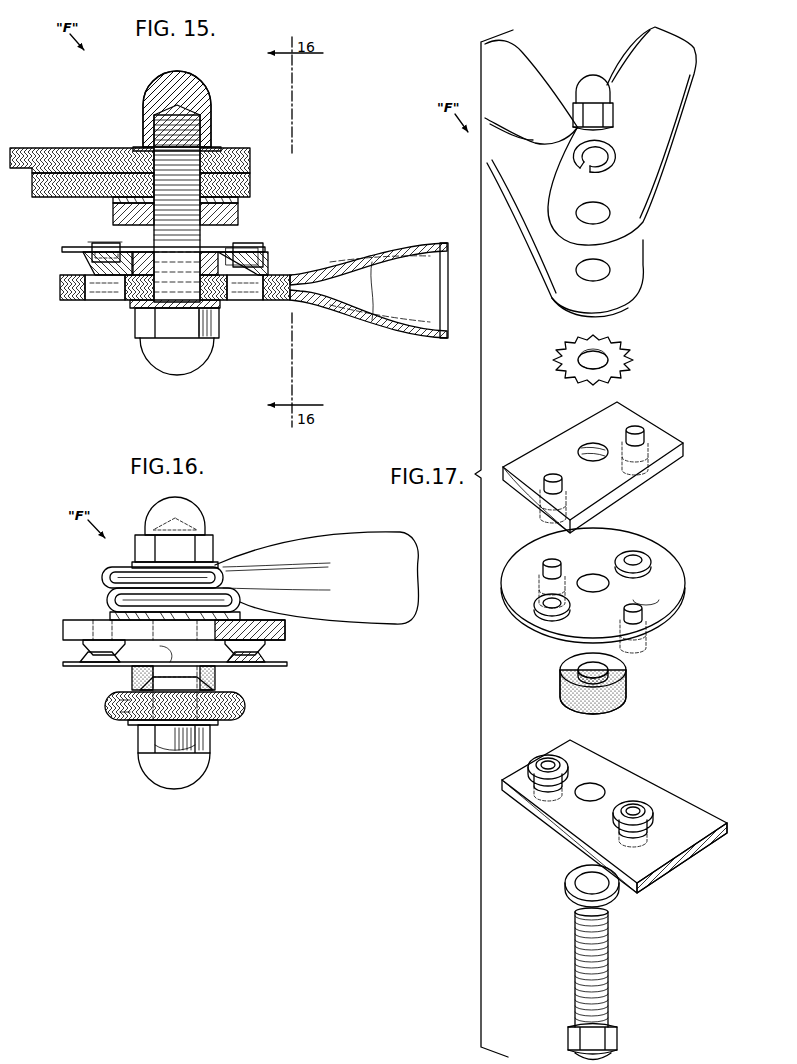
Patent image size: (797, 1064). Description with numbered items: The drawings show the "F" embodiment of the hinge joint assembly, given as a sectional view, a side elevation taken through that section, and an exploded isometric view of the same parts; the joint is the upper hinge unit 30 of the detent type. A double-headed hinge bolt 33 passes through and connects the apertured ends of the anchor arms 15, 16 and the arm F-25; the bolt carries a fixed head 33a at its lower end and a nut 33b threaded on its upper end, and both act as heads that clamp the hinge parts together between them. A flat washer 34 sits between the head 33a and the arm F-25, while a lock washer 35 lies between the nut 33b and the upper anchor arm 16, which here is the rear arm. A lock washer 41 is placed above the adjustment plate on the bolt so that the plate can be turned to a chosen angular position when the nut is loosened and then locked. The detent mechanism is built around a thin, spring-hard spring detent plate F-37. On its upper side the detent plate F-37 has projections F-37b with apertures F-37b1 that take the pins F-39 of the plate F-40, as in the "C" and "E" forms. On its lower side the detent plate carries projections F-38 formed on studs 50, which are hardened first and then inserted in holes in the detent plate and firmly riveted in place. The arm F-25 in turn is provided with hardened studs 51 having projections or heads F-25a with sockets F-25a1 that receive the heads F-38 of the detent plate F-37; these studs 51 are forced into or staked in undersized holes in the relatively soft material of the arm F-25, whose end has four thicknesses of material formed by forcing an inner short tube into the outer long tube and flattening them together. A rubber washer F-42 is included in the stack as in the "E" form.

In FIG. 15, the anchor arm 15 is at (36, 197).
In FIG. 16, the anchor arm 15 is at (107, 598).
In FIG. 17, the anchor arm 15 is at (640, 279).
In FIG. 15, the upper anchor arm 16 is at (40, 145).
In FIG. 16, the upper anchor arm 16 is at (222, 562).
In FIG. 17, the upper anchor arm 16 is at (640, 188).
In FIG. 15, the upper hinge unit 30 is at (144, 98).
In FIG. 15, the hinge bolt 33 is at (208, 138).
In FIG. 17, the hinge bolt 33 is at (608, 962).
In FIG. 15, the head 33a is at (202, 360).
In FIG. 16, the head 33a is at (190, 787).
In FIG. 17, the head 33a is at (618, 1037).
In FIG. 15, the nut 33b is at (200, 86).
In FIG. 16, the nut 33b is at (205, 515).
In FIG. 17, the nut 33b is at (590, 78).
In FIG. 15, the flat washer 34 is at (132, 308).
In FIG. 16, the flat washer 34 is at (218, 724).
In FIG. 17, the flat washer 34 is at (614, 893).
In FIG. 17, the lock washer 35 is at (615, 158).
In FIG. 15, the lock washer 41 is at (240, 203).
In FIG. 16, the lock washer 41 is at (110, 615).
In FIG. 17, the lock washer 41 is at (633, 353).
In FIG. 15, the stud 50 is at (84, 247).
In FIG. 16, the stud 50 is at (168, 652).
In FIG. 17, the stud 50 is at (650, 603).
In FIG. 15, the stud 51 is at (88, 300).
In FIG. 16, the stud 51 is at (145, 706).
In FIG. 17, the stud 51 is at (530, 769).
In FIG. 15, the arm F-25 is at (300, 272).
In FIG. 16, the arm F-25 is at (242, 712).
In FIG. 17, the arm F-25 is at (712, 818).
In FIG. 15, the projection F-25a is at (80, 275).
In FIG. 16, the projection F-25a is at (130, 690).
In FIG. 17, the projection F-25a is at (575, 765).
In FIG. 15, the socket F-25a1 is at (88, 245).
In FIG. 17, the socket F-25a1 is at (546, 762).
In FIG. 15, the spring detent plate F-37 is at (95, 252).
In FIG. 16, the spring detent plate F-37 is at (258, 668).
In FIG. 17, the spring detent plate F-37 is at (675, 590).
In FIG. 16, the projection F-37b is at (265, 672).
In FIG. 17, the projection F-37b is at (655, 560).
In FIG. 17, the aperture F-37b1 is at (636, 558).
In FIG. 15, the projection F-38 is at (245, 255).
In FIG. 16, the projection F-38 is at (212, 678).
In FIG. 17, the projection F-38 is at (625, 640).
In FIG. 16, the pin F-39 is at (92, 652).
In FIG. 17, the pin F-39 is at (642, 463).
In FIG. 15, the plate F-40 is at (204, 218).
In FIG. 16, the plate F-40 is at (63, 631).
In FIG. 17, the plate F-40 is at (668, 440).
In FIG. 15, the rubber washer F-42 is at (132, 290).
In FIG. 16, the rubber washer F-42 is at (132, 672).
In FIG. 17, the rubber washer F-42 is at (628, 690).